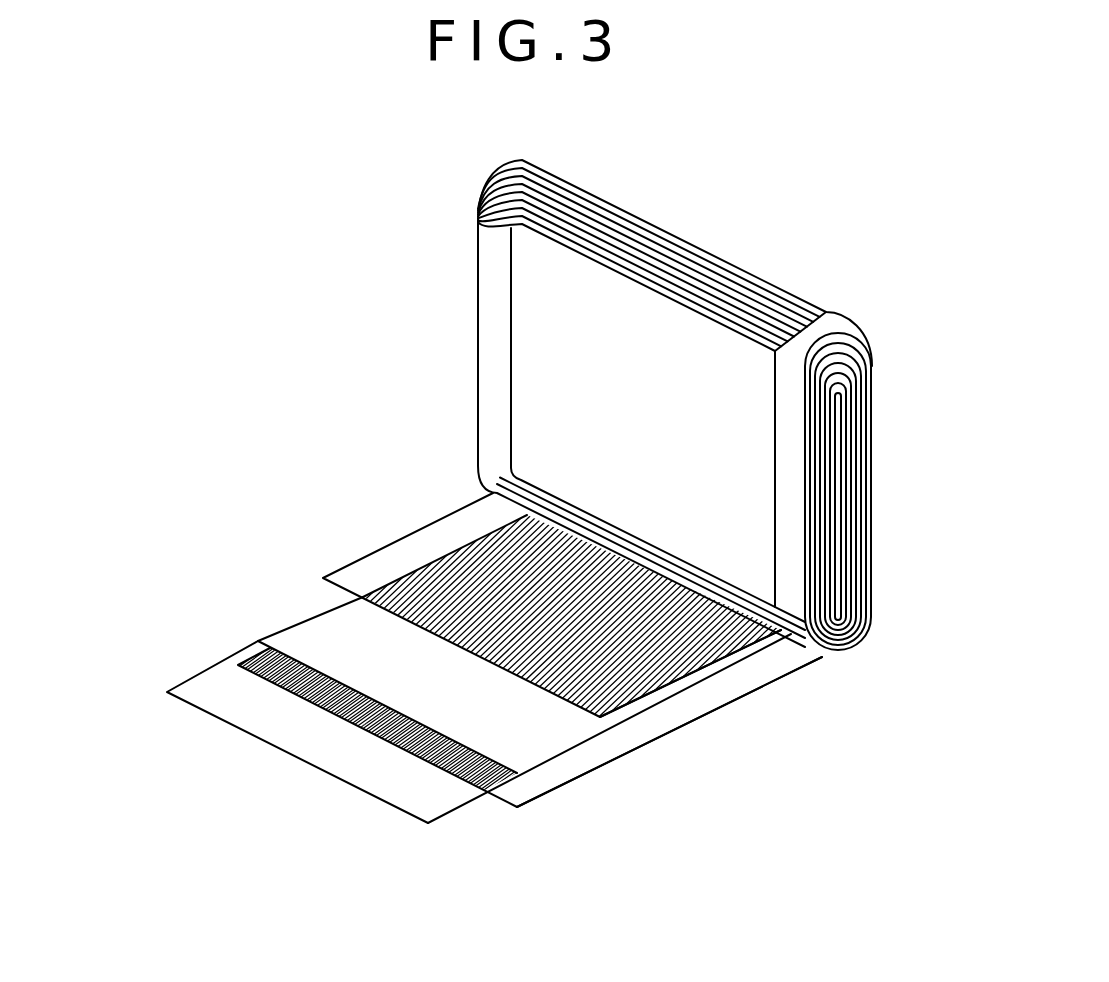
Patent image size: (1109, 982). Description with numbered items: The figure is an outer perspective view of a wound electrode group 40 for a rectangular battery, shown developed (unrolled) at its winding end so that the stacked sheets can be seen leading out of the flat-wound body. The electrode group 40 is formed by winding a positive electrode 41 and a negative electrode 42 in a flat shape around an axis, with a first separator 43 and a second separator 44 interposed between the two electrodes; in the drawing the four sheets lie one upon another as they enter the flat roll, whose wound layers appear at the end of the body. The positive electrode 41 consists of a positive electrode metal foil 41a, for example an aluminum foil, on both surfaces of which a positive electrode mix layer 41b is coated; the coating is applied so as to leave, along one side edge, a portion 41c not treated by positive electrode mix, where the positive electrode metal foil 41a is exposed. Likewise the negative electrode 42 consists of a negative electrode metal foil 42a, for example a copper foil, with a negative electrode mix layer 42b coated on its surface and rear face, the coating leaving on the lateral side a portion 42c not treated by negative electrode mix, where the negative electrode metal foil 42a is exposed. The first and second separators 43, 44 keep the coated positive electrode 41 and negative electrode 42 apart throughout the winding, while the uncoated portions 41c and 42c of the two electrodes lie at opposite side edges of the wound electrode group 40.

The wound electrode group 40 is at (700, 240).
The positive electrode 41 is at (569, 493).
The positive electrode metal foil 41a is at (743, 657).
The positive electrode mix layer 41b is at (643, 688).
The portion not treated by positive electrode mix 41c is at (488, 332).
The negative electrode 42 is at (493, 593).
The negative electrode metal foil 42a is at (307, 699).
The negative electrode mix layer 42b is at (410, 754).
The portion not treated by negative electrode mix 42c is at (540, 780).
The first separator 43 is at (300, 614).
The second separator 44 is at (190, 680).